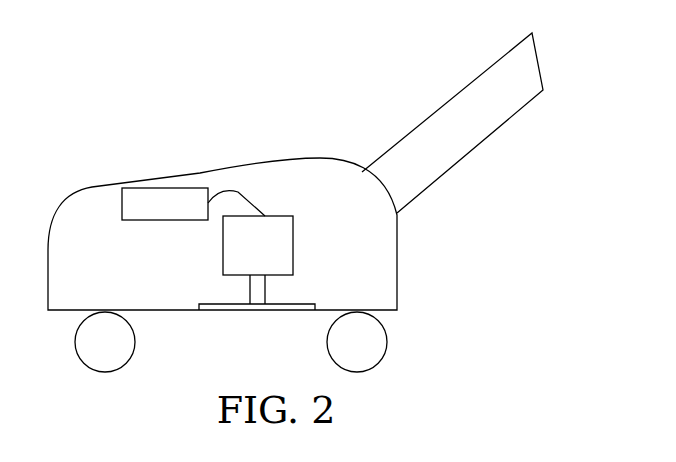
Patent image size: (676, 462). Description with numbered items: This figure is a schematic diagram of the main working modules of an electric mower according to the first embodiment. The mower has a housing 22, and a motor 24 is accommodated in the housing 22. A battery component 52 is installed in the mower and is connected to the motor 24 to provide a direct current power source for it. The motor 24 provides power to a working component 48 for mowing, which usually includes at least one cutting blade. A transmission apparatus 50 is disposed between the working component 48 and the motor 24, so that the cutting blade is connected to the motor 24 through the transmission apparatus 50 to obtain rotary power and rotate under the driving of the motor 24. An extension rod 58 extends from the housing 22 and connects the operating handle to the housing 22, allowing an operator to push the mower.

The housing 22 is at (90, 186).
The battery component 52 is at (173, 202).
The motor 24 is at (233, 258).
The working component 48 is at (210, 305).
The transmission apparatus 50 is at (260, 297).
The extension rod 58 is at (442, 153).